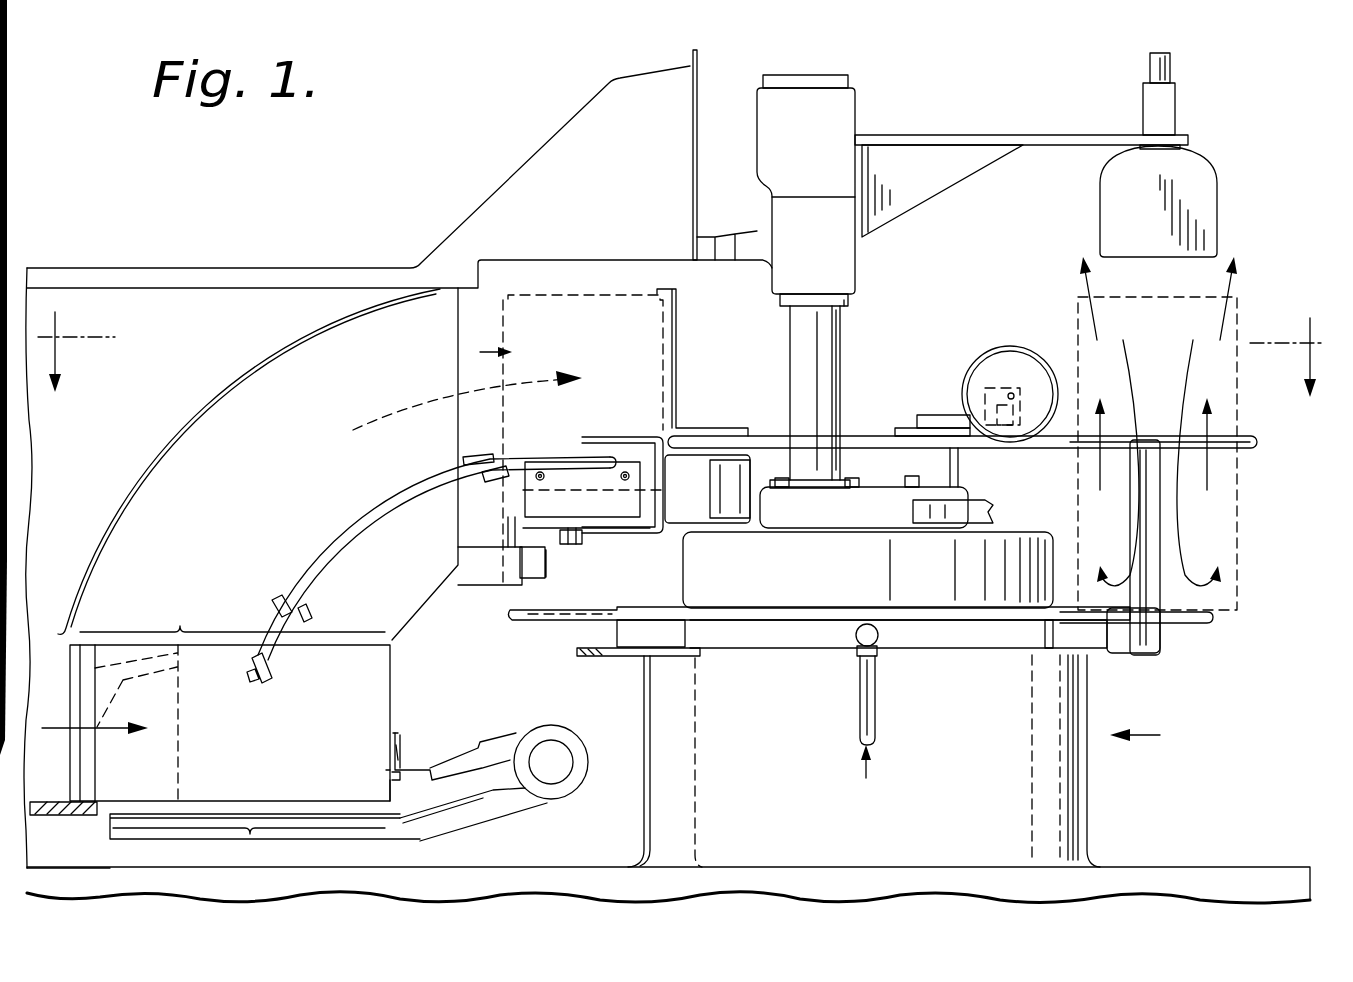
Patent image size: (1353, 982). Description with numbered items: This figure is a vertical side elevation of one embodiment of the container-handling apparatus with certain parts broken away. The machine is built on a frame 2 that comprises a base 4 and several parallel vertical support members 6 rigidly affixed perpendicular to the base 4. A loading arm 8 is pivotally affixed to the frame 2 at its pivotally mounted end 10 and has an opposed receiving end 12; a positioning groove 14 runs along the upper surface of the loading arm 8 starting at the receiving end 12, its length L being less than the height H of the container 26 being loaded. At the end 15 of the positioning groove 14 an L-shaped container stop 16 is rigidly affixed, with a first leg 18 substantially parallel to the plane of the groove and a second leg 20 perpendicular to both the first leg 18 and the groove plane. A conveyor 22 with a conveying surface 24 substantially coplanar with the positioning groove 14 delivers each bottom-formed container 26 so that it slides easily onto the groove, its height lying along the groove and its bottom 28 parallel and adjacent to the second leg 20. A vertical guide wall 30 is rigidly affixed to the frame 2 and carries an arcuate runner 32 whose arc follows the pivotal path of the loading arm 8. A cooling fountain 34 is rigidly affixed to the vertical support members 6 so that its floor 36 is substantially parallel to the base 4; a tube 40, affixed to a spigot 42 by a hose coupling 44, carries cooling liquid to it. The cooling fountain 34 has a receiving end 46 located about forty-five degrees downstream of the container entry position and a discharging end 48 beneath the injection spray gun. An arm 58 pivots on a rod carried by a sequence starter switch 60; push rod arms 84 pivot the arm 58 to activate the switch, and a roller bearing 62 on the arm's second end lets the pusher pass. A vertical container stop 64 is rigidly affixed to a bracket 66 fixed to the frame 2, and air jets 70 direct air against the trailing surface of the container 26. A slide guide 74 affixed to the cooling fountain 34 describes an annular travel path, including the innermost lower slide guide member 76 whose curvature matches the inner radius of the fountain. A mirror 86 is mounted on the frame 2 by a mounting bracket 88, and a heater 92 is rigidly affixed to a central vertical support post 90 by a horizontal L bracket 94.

The frame 2 is at (1180, 733).
The base 4 is at (990, 876).
The vertical support members 6 is at (680, 775).
The loading arm 8 is at (515, 815).
The pivotally mounted end 10 is at (572, 735).
The receiving end 12 is at (100, 838).
The positioning groove 14 is at (340, 805).
The end of positioning groove 15 is at (388, 792).
The L-shaped container stop 16 is at (402, 745).
The first leg 18 is at (425, 775).
The second leg 20 is at (400, 732).
The conveyor 22 is at (48, 830).
The conveying surface 24 is at (52, 802).
The container 26 is at (478, 360).
The bottom of container 28 is at (393, 648).
The vertical guide wall 30 is at (249, 461).
The arcuate runner 32 is at (395, 500).
The cooling fountain 34 is at (784, 642).
The floor of cooling fountain 36 is at (725, 650).
The tube 40 is at (862, 730).
The spigot 42 is at (878, 635).
The hose coupling 44 is at (877, 650).
The receiving end of cooling fountain 46 is at (612, 632).
The discharging end of cooling fountain 48 is at (1053, 634).
The arm 58 is at (556, 528).
The sequence starter switch 60 is at (480, 590).
The roller bearing 62 is at (584, 545).
The vertical container stop 64 is at (676, 316).
The bracket 66 is at (738, 428).
The air jets 70 is at (540, 470).
The slide guide 74 is at (1258, 445).
The innermost lower slide guide member 76 is at (870, 612).
The push rod arms 84 is at (652, 437).
The mirror 86 is at (1030, 360).
The mounting bracket 88 is at (940, 415).
The central vertical support post 90 is at (835, 324).
The heater 92 is at (1218, 195).
The horizontal L bracket 94 is at (1032, 135).